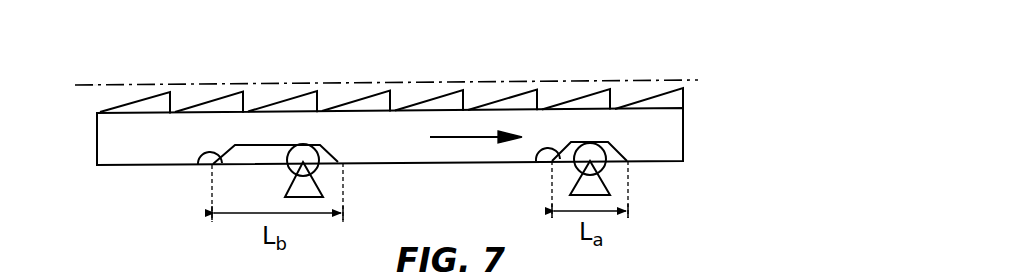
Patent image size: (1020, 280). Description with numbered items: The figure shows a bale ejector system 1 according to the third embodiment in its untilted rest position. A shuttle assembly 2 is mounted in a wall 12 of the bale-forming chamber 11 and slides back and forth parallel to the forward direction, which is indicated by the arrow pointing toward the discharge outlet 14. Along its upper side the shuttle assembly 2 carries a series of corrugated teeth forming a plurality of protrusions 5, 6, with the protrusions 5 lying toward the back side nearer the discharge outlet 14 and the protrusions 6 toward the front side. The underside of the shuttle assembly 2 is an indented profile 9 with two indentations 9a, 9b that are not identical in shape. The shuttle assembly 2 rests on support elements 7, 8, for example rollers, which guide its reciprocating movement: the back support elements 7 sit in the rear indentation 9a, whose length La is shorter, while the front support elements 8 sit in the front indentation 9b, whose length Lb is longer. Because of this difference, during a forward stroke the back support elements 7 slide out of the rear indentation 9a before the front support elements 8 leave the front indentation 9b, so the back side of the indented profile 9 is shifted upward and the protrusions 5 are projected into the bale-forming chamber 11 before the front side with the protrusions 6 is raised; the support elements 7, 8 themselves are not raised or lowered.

The ejector system 1 is at (689, 37).
The shuttle assembly 2 is at (80, 161).
The protrusions 5 is at (597, 97).
The protrusions 6 is at (235, 99).
The support elements 7 is at (594, 162).
The support elements 8 is at (312, 167).
The indented profile 9 is at (685, 133).
The indentation 9a is at (540, 155).
The indentation 9b is at (199, 164).
The bale-forming chamber 11 is at (122, 51).
The wall 12 is at (110, 85).
The discharge outlet 14 is at (725, 109).